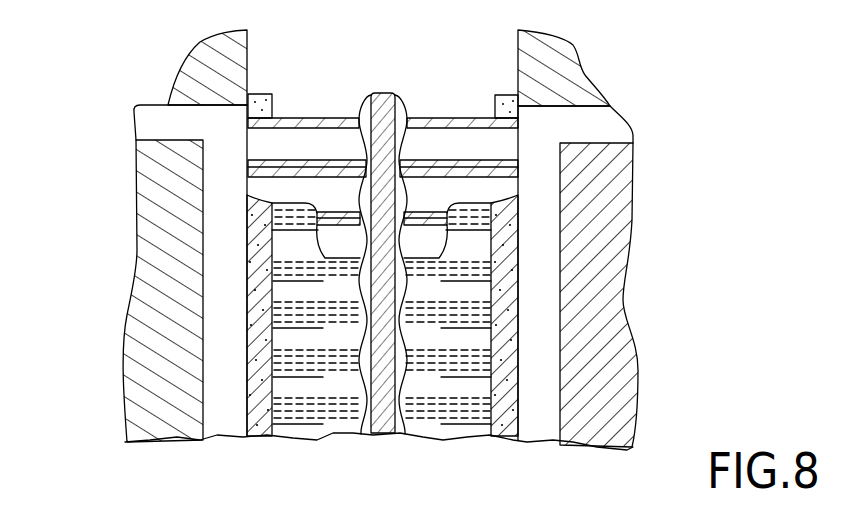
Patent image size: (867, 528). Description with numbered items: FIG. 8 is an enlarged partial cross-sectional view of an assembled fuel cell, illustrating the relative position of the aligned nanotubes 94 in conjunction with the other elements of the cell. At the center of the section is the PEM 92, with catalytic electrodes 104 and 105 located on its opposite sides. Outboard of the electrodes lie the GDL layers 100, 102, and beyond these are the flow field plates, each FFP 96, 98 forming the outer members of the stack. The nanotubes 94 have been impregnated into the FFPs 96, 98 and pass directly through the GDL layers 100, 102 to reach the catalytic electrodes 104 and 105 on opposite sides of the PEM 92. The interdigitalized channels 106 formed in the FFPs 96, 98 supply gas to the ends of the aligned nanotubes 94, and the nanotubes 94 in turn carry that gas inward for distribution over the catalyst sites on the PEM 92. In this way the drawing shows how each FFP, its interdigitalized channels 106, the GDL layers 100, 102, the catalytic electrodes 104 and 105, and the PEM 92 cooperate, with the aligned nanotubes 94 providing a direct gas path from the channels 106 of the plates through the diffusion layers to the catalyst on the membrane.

The PEM 92 is at (385, 93).
The nanotubes 94 is at (435, 140).
The FFP 96 is at (250, 72).
The FFP 98 is at (588, 78).
The GDL layer 100 is at (317, 440).
The GDL layer 102 is at (453, 440).
The catalytic electrode 104 is at (408, 107).
The catalytic electrode 105 is at (360, 101).
The interdigitalized channels 106 is at (145, 120).
The flow field plate FFP is at (463, 425).